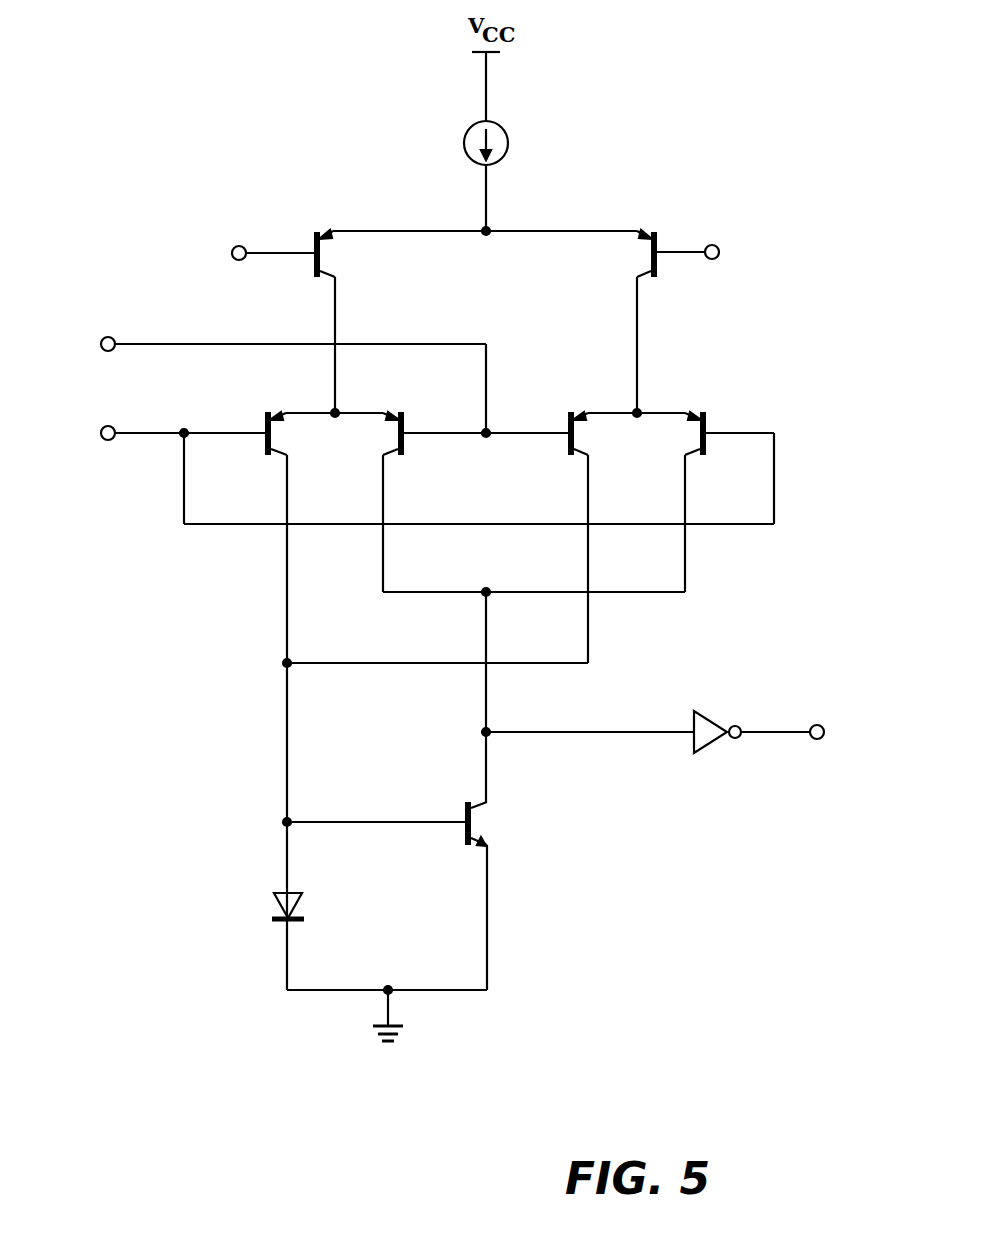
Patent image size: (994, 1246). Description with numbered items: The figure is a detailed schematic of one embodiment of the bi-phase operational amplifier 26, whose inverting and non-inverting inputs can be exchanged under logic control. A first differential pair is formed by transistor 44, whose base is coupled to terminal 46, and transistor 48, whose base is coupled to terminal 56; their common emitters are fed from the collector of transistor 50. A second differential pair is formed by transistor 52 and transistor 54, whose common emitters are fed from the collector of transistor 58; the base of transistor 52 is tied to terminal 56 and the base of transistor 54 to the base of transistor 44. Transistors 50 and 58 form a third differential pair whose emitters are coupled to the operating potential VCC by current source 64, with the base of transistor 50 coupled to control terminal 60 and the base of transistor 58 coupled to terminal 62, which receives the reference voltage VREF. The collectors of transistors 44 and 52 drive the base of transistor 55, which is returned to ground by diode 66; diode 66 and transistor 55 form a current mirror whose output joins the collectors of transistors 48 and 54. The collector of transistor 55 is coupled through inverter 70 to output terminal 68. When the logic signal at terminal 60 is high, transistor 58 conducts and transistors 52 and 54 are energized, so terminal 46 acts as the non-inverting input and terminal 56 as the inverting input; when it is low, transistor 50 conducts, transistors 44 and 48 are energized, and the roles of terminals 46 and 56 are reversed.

The bi-phase operational amplifier 26 is at (700, 1050).
The transistor 44 is at (263, 447).
The terminal 46 is at (110, 440).
The transistor 48 is at (408, 446).
The transistor 50 is at (333, 250).
The transistor 52 is at (565, 446).
The transistor 54 is at (708, 446).
The transistor 55 is at (488, 820).
The terminal 56 is at (110, 351).
The transistor 58 is at (637, 253).
The terminal 60 is at (240, 246).
The terminal 62 is at (712, 259).
The current source 64 is at (508, 136).
The diode 66 is at (272, 906).
The terminal 68 is at (814, 725).
The inverter 70 is at (712, 746).